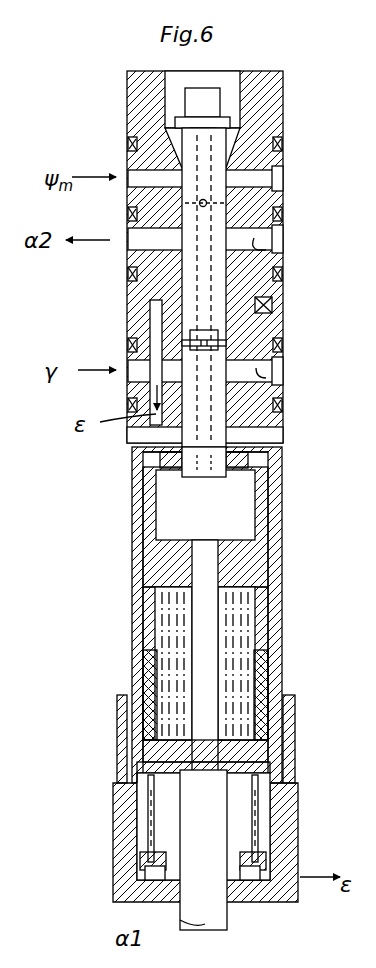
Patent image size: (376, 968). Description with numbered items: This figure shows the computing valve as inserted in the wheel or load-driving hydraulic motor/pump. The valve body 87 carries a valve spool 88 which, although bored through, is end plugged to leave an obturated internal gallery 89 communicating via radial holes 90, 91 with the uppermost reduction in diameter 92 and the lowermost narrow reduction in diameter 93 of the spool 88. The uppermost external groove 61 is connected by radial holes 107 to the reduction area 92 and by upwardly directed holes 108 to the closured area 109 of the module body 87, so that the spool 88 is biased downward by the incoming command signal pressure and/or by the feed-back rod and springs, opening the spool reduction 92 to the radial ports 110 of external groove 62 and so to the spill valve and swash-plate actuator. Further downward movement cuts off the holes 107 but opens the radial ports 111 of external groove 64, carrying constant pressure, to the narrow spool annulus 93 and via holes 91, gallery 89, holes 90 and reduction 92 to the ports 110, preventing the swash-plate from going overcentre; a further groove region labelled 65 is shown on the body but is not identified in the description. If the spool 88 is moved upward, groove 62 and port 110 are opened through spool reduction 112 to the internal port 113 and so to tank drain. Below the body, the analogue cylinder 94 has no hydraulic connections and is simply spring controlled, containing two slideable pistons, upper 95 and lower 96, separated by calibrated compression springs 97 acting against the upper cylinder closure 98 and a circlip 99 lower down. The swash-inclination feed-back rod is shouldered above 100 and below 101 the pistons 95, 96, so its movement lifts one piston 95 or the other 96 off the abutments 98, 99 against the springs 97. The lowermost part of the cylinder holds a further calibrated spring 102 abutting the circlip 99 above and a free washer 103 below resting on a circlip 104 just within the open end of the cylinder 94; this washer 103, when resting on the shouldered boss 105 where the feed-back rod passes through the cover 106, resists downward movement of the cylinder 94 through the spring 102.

The valve body 87 is at (272, 96).
The closured area 109 is at (180, 120).
The upwardly directed holes 108 is at (243, 150).
The valve spool 88 is at (187, 148).
The uppermost external groove 61 is at (277, 173).
The external groove 62 is at (280, 241).
The external groove 64 is at (278, 365).
The passage 65 is at (130, 345).
The obturated internal gallery 89 is at (204, 267).
The radial holes 107 is at (130, 146).
The radial holes 90 is at (130, 214).
The spool reduction 112 is at (282, 275).
The uppermost reduction in diameter 92 is at (208, 203).
The radial ports 110 is at (259, 250).
The internal port 113 is at (273, 305).
The radial ports 111 is at (262, 376).
The lowermost narrow reduction in diameter 93 is at (226, 343).
The radial holes 91 is at (205, 343).
The analogue cylinder 94 is at (140, 488).
The upper cylinder closure 98 is at (252, 461).
The upper piston 95 is at (162, 567).
The calibrated compression springs 97 is at (242, 637).
The shoulder 100 is at (232, 549).
The lower piston 96 is at (152, 751).
The circlip 99 is at (250, 769).
The cover 106 is at (120, 856).
The shoulder 101 is at (183, 774).
The further calibrated spring 102 is at (258, 807).
The free washer 103 is at (258, 854).
The shouldered boss 105 is at (152, 880).
The circlip 104 is at (258, 884).